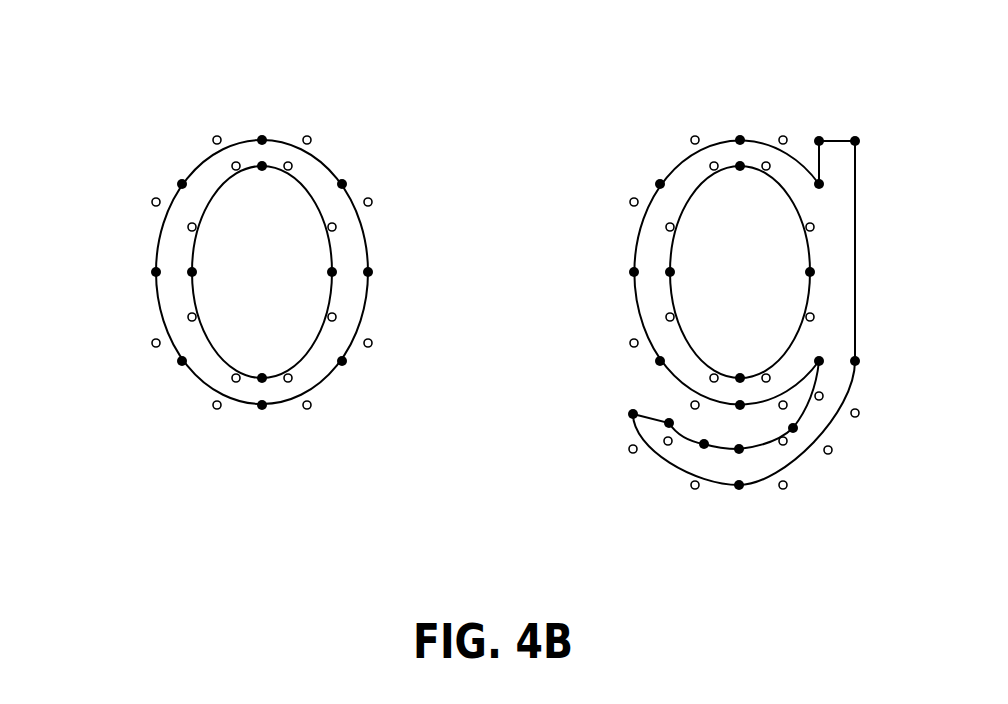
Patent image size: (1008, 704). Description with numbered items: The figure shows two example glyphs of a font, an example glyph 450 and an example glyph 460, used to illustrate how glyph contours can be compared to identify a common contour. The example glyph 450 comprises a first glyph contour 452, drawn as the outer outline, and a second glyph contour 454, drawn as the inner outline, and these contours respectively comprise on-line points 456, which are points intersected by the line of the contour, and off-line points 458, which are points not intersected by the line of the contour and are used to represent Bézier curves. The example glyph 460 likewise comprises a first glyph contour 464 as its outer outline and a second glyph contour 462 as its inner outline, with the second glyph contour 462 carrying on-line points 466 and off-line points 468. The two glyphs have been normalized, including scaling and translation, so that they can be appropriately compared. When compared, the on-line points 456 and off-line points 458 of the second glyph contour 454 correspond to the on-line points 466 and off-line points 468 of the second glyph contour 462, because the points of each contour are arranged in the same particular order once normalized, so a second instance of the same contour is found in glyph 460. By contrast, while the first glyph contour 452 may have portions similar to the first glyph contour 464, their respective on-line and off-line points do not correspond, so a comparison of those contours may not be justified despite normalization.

The example glyph 450 is at (208, 88).
The first glyph contour 452 is at (323, 163).
The second glyph contour 454 is at (222, 183).
The on-line points 456 is at (188, 275).
The off-line points 458 is at (188, 229).
The example glyph 460 is at (723, 88).
The second glyph contour 462 is at (692, 192).
The first glyph contour 464 is at (635, 247).
The on-line points 466 is at (666, 275).
The off-line points 468 is at (666, 320).